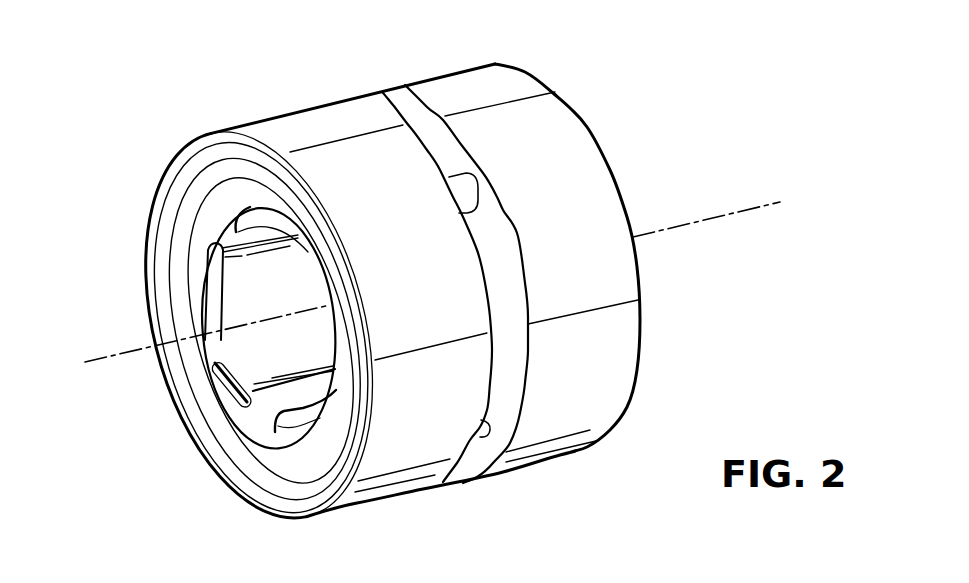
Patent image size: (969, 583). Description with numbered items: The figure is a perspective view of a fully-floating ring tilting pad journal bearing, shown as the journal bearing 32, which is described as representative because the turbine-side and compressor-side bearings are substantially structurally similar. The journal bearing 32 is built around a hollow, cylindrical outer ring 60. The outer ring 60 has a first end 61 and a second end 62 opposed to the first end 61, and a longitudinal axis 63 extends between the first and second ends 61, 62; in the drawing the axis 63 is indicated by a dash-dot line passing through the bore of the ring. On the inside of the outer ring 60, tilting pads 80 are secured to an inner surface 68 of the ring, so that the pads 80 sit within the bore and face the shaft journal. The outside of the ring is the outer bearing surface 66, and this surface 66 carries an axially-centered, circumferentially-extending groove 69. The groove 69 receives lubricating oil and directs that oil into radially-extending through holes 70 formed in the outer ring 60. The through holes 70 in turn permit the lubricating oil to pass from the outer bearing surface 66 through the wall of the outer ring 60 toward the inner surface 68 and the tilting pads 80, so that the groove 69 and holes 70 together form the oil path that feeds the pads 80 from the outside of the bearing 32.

The turbine-side journal bearing 32 is at (228, 107).
The outer ring 60 is at (613, 375).
The first end 61 is at (220, 162).
The second end 62 is at (527, 78).
The longitudinal axis 63 is at (707, 217).
The outer bearing surface 66 is at (565, 167).
The inner surface 68 is at (270, 407).
The groove 69 is at (390, 110).
The radially-extending through holes 70 is at (483, 428).
The tilting pads 80 is at (243, 217).